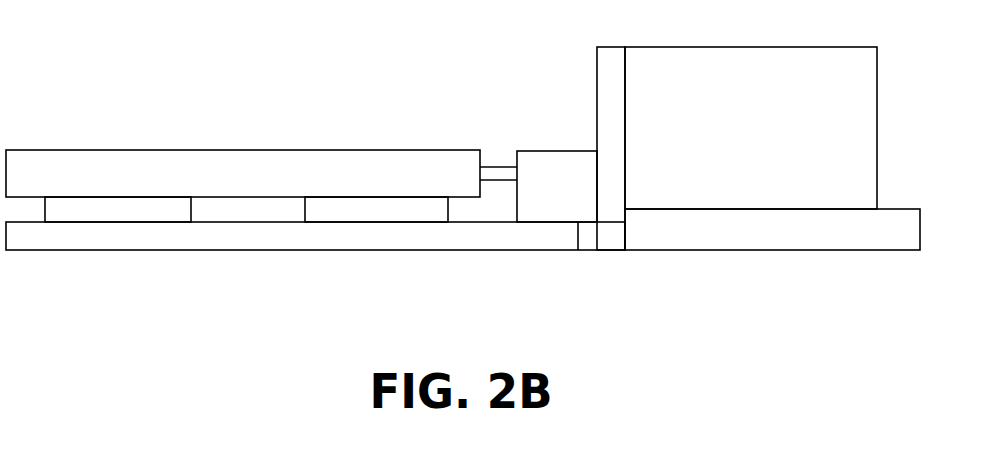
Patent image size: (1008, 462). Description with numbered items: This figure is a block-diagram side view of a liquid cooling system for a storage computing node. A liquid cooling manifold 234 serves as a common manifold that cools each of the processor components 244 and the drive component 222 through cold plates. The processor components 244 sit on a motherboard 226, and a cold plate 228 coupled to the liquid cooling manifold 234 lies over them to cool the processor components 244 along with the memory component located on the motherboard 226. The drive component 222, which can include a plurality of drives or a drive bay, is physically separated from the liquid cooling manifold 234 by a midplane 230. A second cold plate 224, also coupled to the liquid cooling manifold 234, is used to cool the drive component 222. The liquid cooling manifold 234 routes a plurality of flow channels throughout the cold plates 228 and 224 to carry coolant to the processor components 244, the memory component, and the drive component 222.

The drive component 222 is at (815, 47).
The cold plate 224 is at (908, 209).
The motherboard 226 is at (503, 252).
The cold plate 228 is at (440, 150).
The midplane 230 is at (610, 47).
The liquid cooling manifold 234 is at (558, 151).
The processor component 244 is at (185, 218).